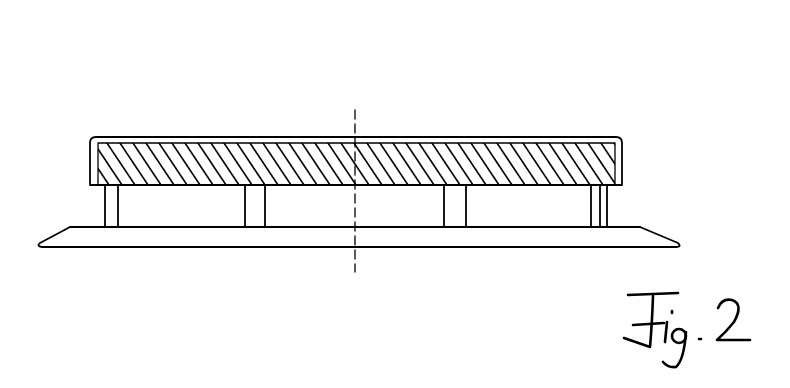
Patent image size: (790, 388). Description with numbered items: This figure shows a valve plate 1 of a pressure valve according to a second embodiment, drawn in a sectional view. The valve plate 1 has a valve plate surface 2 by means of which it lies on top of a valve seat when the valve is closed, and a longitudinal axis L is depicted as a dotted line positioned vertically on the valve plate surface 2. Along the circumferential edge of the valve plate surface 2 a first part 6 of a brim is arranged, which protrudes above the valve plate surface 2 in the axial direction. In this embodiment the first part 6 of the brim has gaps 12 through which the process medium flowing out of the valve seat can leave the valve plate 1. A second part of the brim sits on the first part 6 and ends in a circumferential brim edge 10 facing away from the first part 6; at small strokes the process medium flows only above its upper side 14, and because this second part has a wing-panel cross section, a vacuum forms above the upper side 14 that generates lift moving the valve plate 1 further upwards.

The valve plate 1 is at (465, 102).
The valve plate surface 2 is at (297, 187).
The first part of the brim 6 is at (623, 200).
The circumferential brim edge 10 is at (633, 237).
The gaps 12 is at (172, 213).
The upper side 14 is at (70, 218).
The longitudinal axis L is at (357, 110).